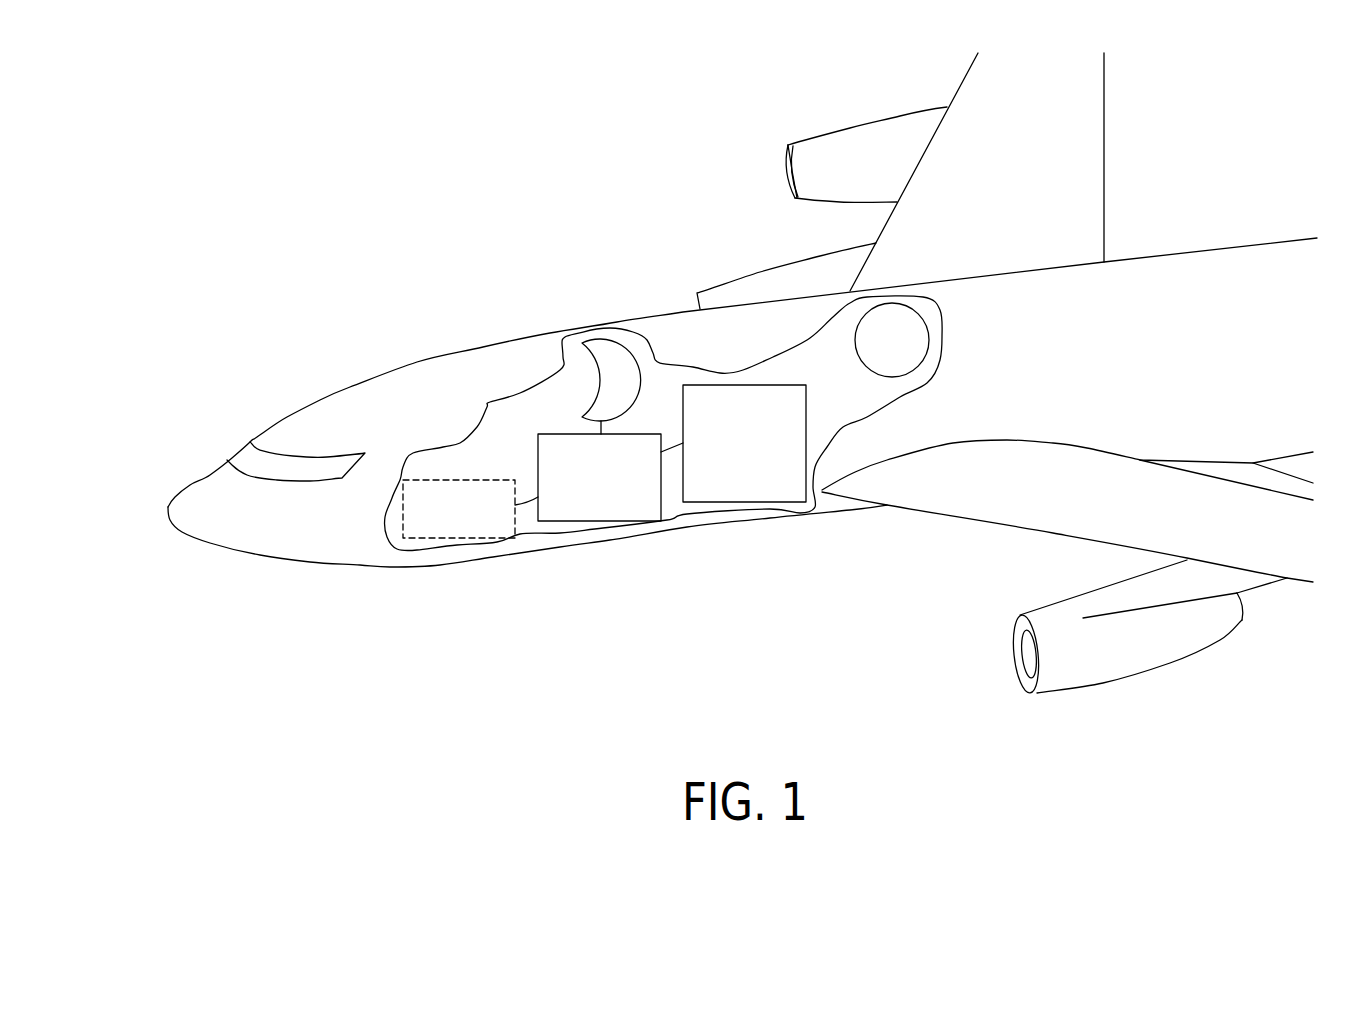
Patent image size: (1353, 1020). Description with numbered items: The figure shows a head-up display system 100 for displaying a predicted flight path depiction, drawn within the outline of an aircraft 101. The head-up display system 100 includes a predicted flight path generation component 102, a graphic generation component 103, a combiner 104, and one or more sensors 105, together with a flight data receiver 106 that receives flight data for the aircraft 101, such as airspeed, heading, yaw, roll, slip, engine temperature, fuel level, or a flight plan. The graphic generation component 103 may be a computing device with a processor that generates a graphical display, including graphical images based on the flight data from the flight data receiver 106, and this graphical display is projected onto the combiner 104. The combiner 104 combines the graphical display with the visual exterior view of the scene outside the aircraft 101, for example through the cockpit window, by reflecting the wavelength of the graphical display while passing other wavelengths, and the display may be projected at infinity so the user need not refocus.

The head-up display system 100 is at (356, 180).
The aircraft 101 is at (320, 396).
The predicted flight path generation component 102 is at (746, 385).
The graphic generation component 103 is at (551, 433).
The combiner 104 is at (632, 353).
The sensors 105 is at (930, 342).
The flight data receiver 106 is at (403, 505).